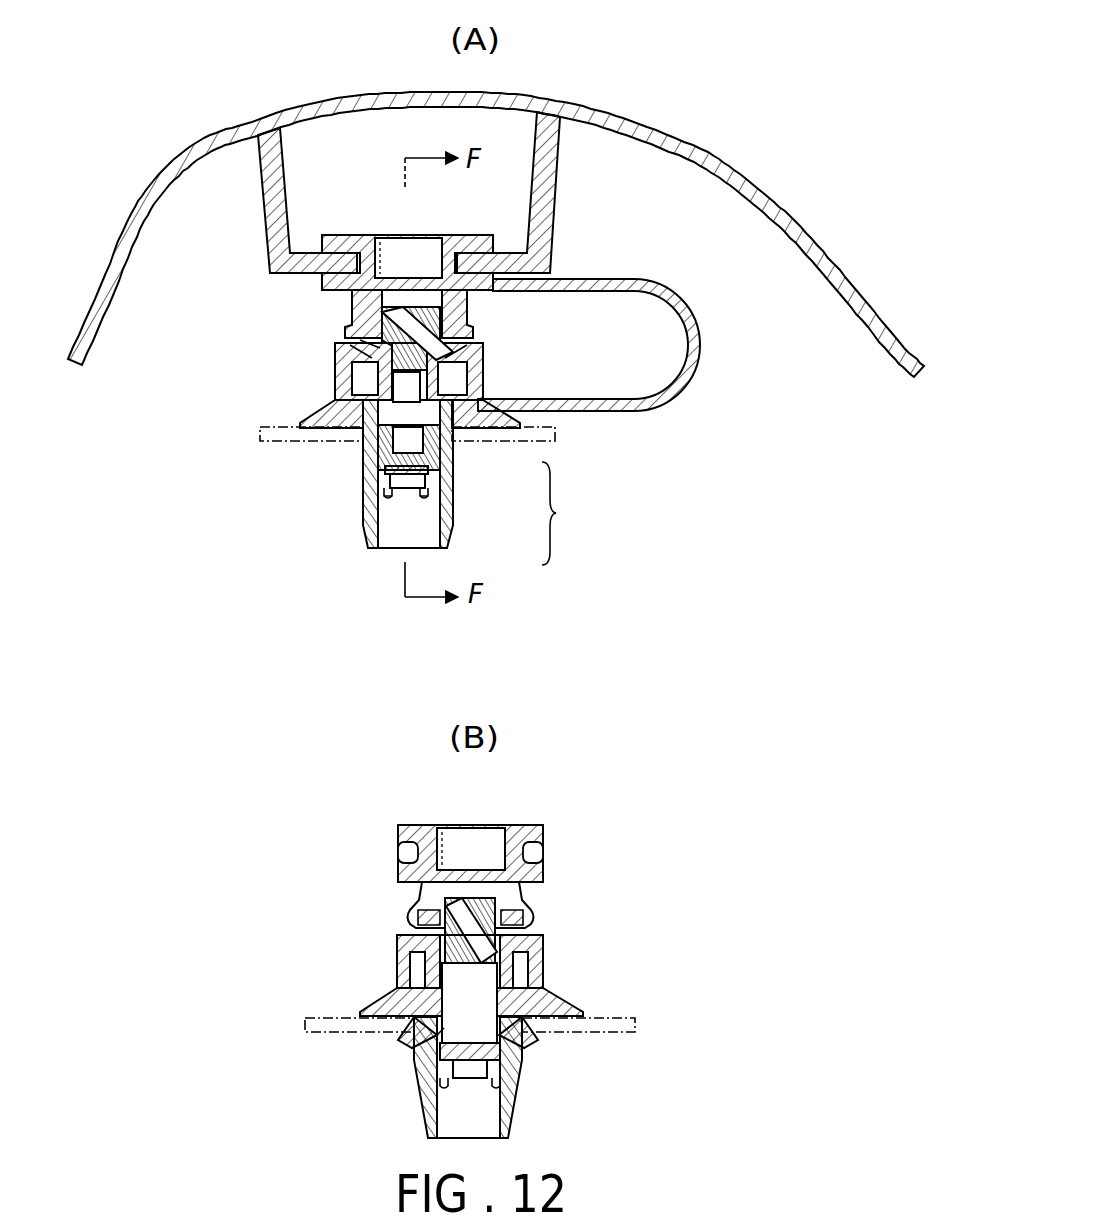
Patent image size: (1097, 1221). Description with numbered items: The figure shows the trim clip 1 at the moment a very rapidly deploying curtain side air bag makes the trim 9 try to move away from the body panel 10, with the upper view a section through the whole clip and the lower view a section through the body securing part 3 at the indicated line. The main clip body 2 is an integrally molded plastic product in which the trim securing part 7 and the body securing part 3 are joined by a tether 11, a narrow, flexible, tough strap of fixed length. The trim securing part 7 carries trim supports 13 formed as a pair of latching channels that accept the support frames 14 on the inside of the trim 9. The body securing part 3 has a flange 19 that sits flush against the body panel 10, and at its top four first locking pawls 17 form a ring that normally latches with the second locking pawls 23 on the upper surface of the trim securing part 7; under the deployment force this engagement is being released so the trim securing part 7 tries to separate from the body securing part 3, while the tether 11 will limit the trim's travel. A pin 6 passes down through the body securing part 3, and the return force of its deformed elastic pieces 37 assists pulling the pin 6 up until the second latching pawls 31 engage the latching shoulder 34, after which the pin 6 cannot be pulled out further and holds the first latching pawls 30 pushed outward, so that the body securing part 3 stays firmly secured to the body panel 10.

The trim clip 1 is at (574, 527).
The main clip body 2 is at (458, 469).
The body securing part 3 is at (344, 477).
The pin 6 is at (411, 498).
The trim securing part 7 is at (312, 292).
The trim 9 is at (706, 170).
The body panel 10 is at (268, 425).
The tether 11 is at (595, 280).
The trim supports 13 is at (334, 235).
The support frames 14 is at (274, 173).
The first locking pawls 17 is at (463, 372).
The flange 19 is at (376, 1012).
The second locking pawls 23 is at (468, 357).
The first latching pawls 30 is at (412, 1040).
The second latching pawls 31 is at (422, 1037).
The latching shoulder 34 is at (505, 1030).
The elastic pieces 37 is at (355, 346).